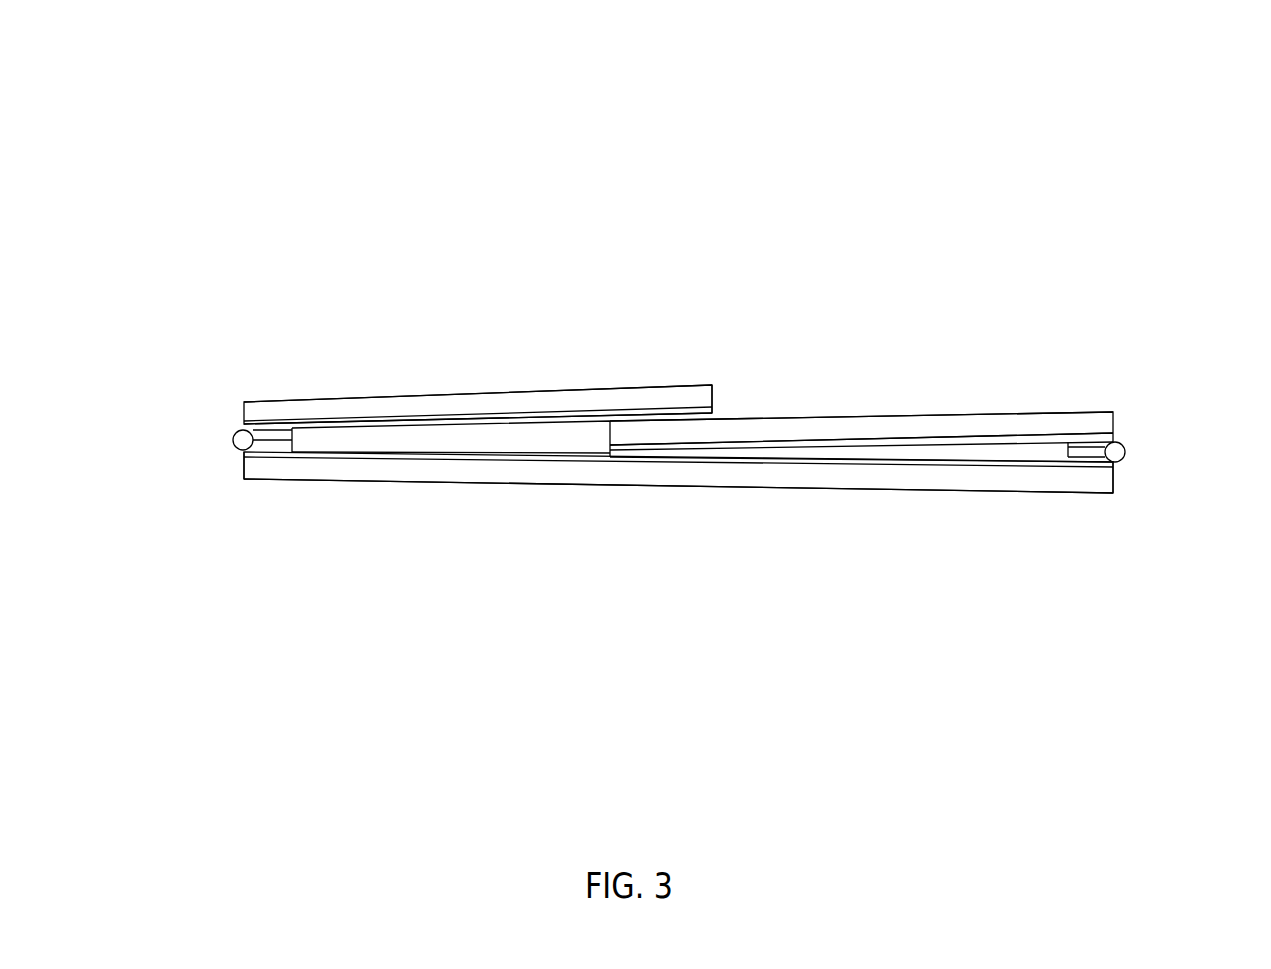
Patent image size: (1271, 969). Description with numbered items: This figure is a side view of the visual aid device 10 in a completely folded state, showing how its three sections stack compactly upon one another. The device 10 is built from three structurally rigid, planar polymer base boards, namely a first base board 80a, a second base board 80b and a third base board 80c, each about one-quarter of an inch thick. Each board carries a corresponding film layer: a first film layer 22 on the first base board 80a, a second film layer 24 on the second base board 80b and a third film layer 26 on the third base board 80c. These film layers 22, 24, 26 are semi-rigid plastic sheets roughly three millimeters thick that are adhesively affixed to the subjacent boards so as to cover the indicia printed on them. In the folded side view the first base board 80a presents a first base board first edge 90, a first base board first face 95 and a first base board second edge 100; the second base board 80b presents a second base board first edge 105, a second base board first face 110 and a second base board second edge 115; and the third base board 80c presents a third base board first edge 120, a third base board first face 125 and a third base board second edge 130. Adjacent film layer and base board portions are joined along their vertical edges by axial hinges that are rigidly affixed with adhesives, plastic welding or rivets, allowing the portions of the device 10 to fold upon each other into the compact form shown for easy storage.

The visual aid 10 is at (1000, 116).
The first film layer 22 is at (400, 418).
The second film layer 24 is at (765, 458).
The third film layer 26 is at (955, 440).
The first base board 80a is at (502, 400).
The second base board 80b is at (822, 475).
The third base board 80c is at (903, 427).
The first base board first edge 90 is at (712, 390).
The first base board first face 95 is at (360, 415).
The first base board second edge 100 is at (243, 407).
The second base board first edge 105 is at (242, 463).
The second base board first face 110 is at (515, 462).
The second base board second edge 115 is at (1113, 478).
The third base board first edge 120 is at (1115, 418).
The third base board first face 125 is at (850, 438).
The third base board second edge 130 is at (608, 424).